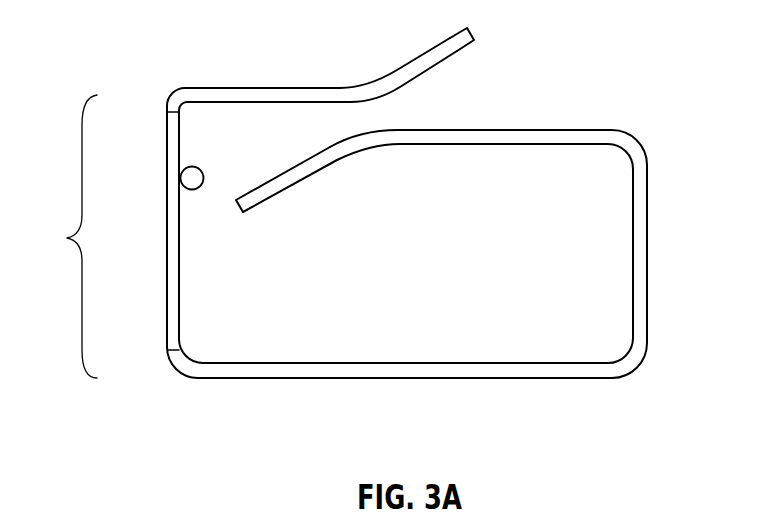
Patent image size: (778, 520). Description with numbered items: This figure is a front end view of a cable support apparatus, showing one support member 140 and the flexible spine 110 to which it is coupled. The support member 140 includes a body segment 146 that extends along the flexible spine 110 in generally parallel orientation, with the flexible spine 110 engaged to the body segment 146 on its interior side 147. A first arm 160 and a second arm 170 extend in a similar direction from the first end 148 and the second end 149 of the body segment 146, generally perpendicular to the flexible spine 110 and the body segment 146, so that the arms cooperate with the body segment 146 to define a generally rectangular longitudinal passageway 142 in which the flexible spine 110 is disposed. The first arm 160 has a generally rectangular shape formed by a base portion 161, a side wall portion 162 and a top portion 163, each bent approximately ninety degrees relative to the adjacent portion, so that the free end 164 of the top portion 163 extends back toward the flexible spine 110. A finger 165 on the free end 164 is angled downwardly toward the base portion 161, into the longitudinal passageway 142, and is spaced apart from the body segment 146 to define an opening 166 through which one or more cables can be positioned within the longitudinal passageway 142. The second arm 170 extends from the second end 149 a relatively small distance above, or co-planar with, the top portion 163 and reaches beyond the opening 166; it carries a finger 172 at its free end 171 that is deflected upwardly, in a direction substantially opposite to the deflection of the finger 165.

The flexible spine 110 is at (193, 167).
The support member 140 is at (650, 48).
The longitudinal passageway 142 is at (463, 322).
The body segment 146 is at (149, 231).
The interior side 147 is at (185, 323).
The first end 148 is at (183, 365).
The second end 149 is at (178, 98).
The first arm 160 is at (457, 268).
The base portion 161 is at (400, 372).
The side wall portion 162 is at (638, 262).
The top portion 163 is at (522, 131).
The free end 164 is at (365, 142).
The finger 165 is at (265, 193).
The opening 166 is at (223, 225).
The second arm 170 is at (361, 74).
The free end 171 is at (393, 85).
The finger 172 is at (467, 40).